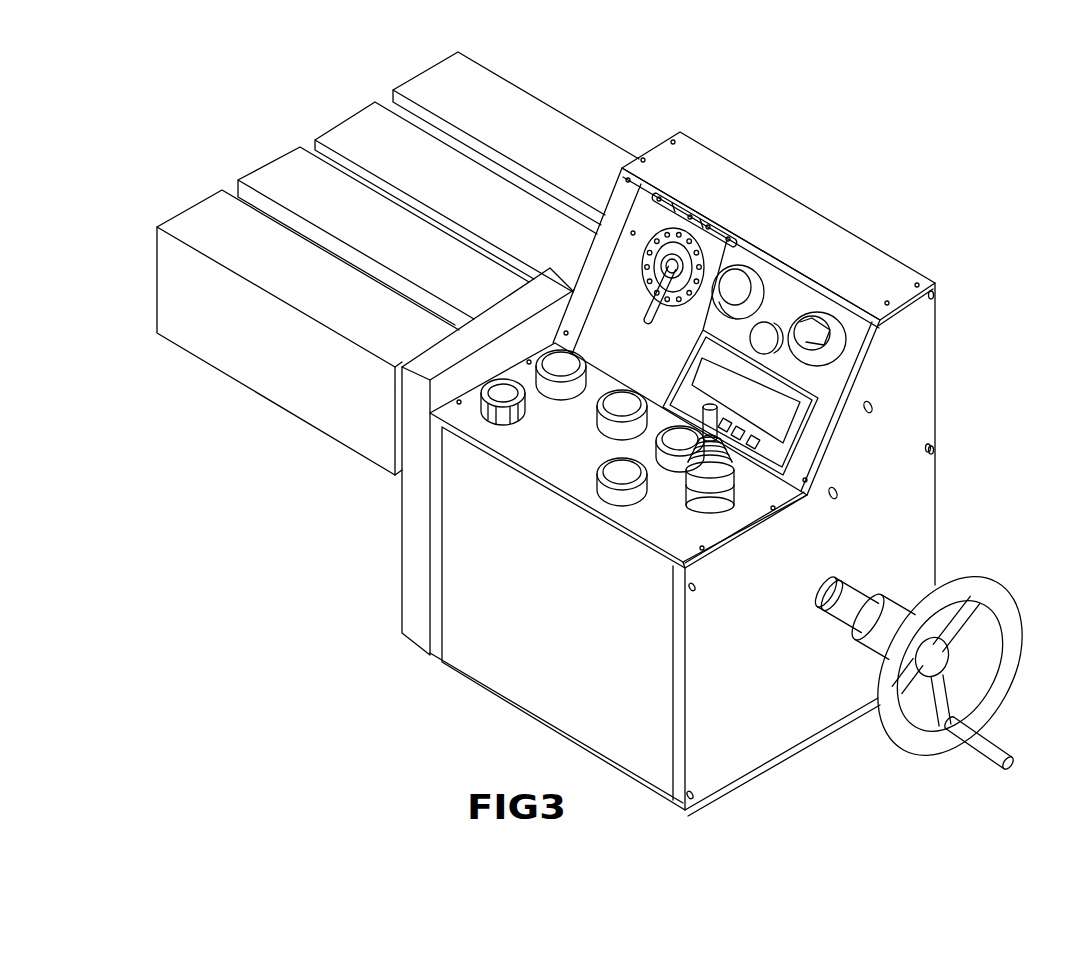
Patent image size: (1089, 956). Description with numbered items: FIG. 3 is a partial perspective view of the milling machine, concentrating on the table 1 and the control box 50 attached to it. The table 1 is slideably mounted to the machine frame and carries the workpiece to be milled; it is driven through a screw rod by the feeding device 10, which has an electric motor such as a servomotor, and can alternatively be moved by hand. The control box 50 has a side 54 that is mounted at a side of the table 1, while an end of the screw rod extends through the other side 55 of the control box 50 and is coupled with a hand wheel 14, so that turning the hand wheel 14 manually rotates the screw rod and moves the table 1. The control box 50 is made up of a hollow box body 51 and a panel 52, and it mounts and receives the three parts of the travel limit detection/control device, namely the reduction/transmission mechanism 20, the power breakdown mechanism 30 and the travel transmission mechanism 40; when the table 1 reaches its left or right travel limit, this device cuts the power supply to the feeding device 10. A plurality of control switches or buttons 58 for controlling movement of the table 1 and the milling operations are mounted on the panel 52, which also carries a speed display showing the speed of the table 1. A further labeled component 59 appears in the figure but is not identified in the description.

The table 1 is at (230, 366).
The feeding device 10 is at (900, 594).
The hand wheel 14 is at (1003, 635).
The reduction/transmission mechanism 20 is at (722, 318).
The power breakdown mechanism 30 is at (703, 236).
The travel transmission mechanism 40 is at (638, 303).
The control box 50 is at (950, 347).
The hollow box body 51 is at (480, 643).
The panel 52 is at (612, 325).
The side 54 is at (432, 586).
The other side 55 is at (777, 718).
The control switches or buttons 58 is at (715, 485).
The sub-panel with display 59 is at (792, 266).